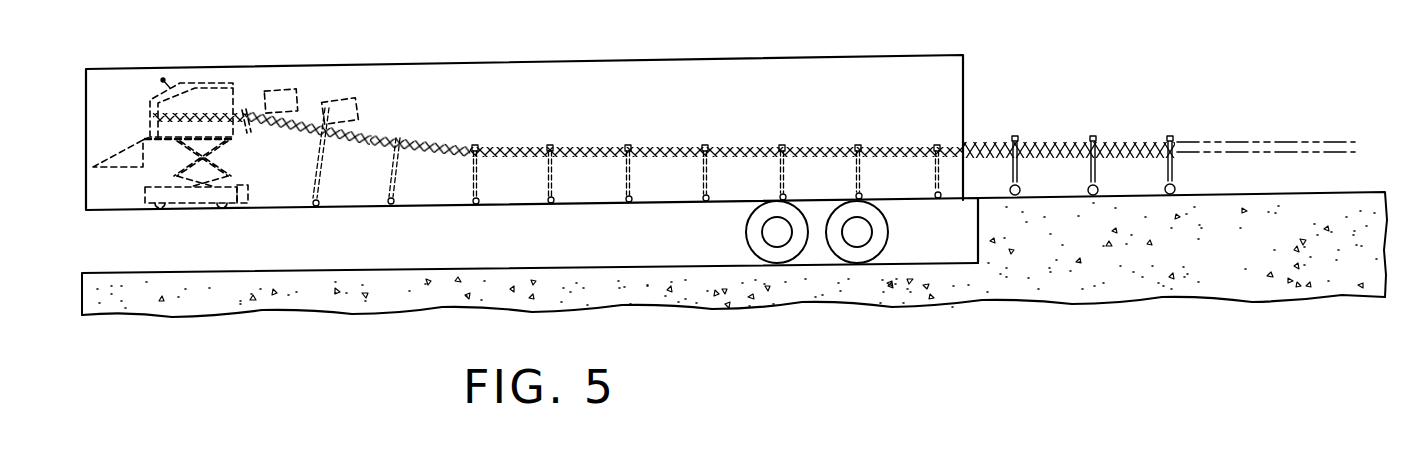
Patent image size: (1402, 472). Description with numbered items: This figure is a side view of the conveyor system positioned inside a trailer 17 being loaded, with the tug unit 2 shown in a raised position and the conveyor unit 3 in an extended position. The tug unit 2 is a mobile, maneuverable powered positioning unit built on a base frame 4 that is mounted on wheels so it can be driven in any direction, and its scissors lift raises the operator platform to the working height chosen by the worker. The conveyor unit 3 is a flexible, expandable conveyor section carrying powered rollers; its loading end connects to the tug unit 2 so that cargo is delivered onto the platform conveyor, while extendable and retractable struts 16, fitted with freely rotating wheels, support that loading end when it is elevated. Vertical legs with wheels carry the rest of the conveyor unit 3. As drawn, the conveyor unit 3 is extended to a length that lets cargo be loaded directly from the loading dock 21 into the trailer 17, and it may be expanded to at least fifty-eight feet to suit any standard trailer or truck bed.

The tug unit 2 is at (225, 134).
The conveyor unit 3 is at (893, 135).
The base frame 4 is at (180, 214).
The struts 16 is at (317, 152).
The trailer 17 is at (920, 56).
The loading dock 21 is at (1000, 199).